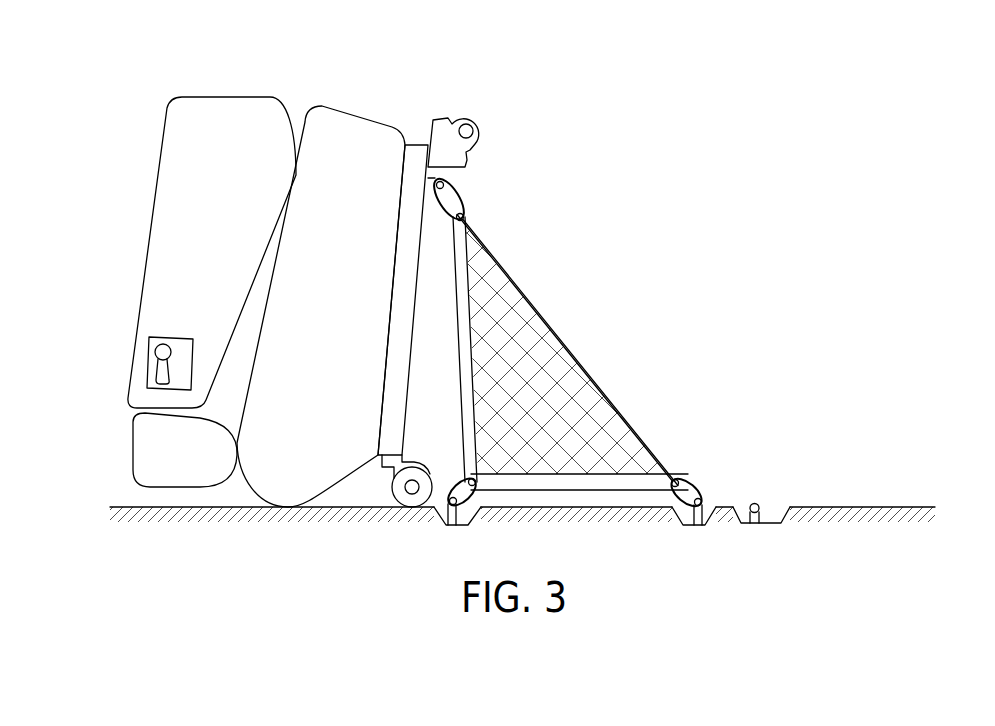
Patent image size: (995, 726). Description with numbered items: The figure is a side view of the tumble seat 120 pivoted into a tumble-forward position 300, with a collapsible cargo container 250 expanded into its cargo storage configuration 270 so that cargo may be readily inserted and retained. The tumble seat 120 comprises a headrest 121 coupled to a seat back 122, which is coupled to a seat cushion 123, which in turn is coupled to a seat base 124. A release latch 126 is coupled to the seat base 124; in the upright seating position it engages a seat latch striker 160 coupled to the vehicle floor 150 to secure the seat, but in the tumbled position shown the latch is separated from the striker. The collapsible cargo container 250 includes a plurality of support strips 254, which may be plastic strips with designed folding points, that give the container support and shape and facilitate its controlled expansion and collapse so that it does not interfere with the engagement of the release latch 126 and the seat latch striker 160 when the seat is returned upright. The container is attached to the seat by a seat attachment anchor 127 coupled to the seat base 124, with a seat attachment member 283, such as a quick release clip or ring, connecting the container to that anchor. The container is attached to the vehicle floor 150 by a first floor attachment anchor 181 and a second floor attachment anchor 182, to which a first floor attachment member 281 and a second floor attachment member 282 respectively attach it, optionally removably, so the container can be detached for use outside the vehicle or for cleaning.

The tumble-forward position 300 is at (215, 78).
The tumble seat 120 is at (119, 420).
The headrest 121 is at (140, 458).
The seat back 122 is at (152, 240).
The seat cushion 123 is at (347, 117).
The seat base 124 is at (394, 362).
The release latch 126 is at (441, 122).
The seat attachment anchor 127 is at (428, 184).
The cargo storage configuration 270 is at (590, 338).
The seat attachment member 283 is at (467, 196).
The support strips 254 is at (463, 304).
The collapsible cargo container 250 is at (578, 405).
The second floor attachment member 282 is at (452, 479).
The first floor attachment member 281 is at (690, 481).
The second floor attachment anchor 182 is at (451, 524).
The first floor attachment anchor 181 is at (699, 524).
The seat latch striker 160 is at (756, 503).
The vehicle floor 150 is at (877, 505).